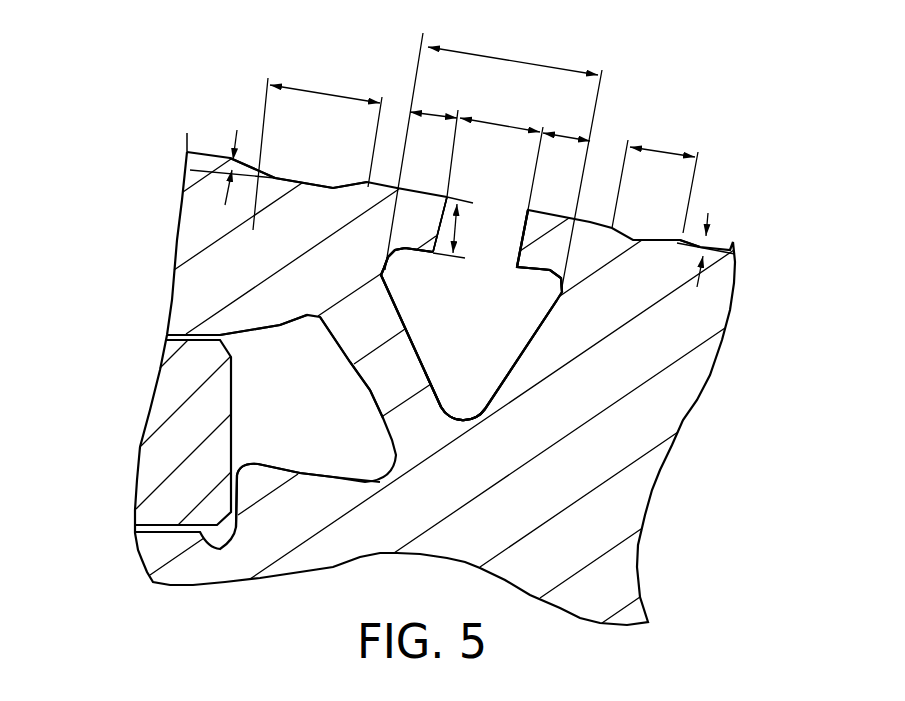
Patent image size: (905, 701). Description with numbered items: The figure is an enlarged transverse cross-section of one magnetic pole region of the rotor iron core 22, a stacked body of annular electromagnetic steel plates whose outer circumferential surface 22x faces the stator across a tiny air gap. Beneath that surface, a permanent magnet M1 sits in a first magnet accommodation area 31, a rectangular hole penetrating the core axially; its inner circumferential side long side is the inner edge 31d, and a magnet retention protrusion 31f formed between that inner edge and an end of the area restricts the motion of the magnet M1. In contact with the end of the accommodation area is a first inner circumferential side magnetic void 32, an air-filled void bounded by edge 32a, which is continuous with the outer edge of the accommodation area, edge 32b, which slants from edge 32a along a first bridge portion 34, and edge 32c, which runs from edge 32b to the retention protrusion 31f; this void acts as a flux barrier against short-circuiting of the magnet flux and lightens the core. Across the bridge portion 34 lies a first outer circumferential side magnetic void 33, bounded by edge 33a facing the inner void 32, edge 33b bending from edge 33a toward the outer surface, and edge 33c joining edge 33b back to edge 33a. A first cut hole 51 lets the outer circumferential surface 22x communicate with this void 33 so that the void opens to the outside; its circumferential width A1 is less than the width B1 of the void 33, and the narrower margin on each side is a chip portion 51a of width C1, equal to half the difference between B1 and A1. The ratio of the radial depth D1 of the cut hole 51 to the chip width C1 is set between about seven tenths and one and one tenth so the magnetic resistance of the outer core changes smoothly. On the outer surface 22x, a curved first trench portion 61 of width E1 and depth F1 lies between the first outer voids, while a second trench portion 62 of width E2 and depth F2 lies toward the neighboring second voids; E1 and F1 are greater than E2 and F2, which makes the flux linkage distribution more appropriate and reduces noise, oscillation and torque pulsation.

The rotor iron core 22 is at (662, 412).
The outer circumferential surface 22x is at (212, 152).
The first trench portion 61 is at (312, 185).
The second trench portion 62 is at (647, 238).
The first cut hole 51 is at (520, 233).
The chip portion 51a is at (418, 217).
The first outer circumferential side magnetic void 33 is at (500, 332).
The edge of first outer circumferential side magnetic void 33a is at (398, 324).
The edge of first outer circumferential side magnetic void 33b is at (413, 250).
The edge of first outer circumferential side magnetic void 33c is at (500, 387).
The first bridge portion 34 is at (403, 372).
The first inner circumferential side magnetic void 32 is at (370, 457).
The edge of first inner circumferential side magnetic void 32a is at (267, 331).
The edge of first inner circumferential side magnetic void 32b is at (350, 362).
The edge of first inner circumferential side magnetic void 32c is at (330, 472).
The first magnet accommodation area 31 is at (185, 331).
The inner edge 31d is at (213, 330).
The magnet retention protrusion 31f is at (245, 478).
The permanent magnet M1 is at (157, 450).
The width of first trench portion E1 is at (327, 97).
The width of second trench portion E2 is at (663, 158).
The width of first outer circumferential side magnetic void B1 is at (515, 58).
The width of chip portion C1 is at (432, 110).
The width of first cut hole A1 is at (500, 120).
The depth of first cut hole D1 is at (460, 225).
The depth of first trench portion F1 is at (230, 159).
The depth of second trench portion F2 is at (715, 253).